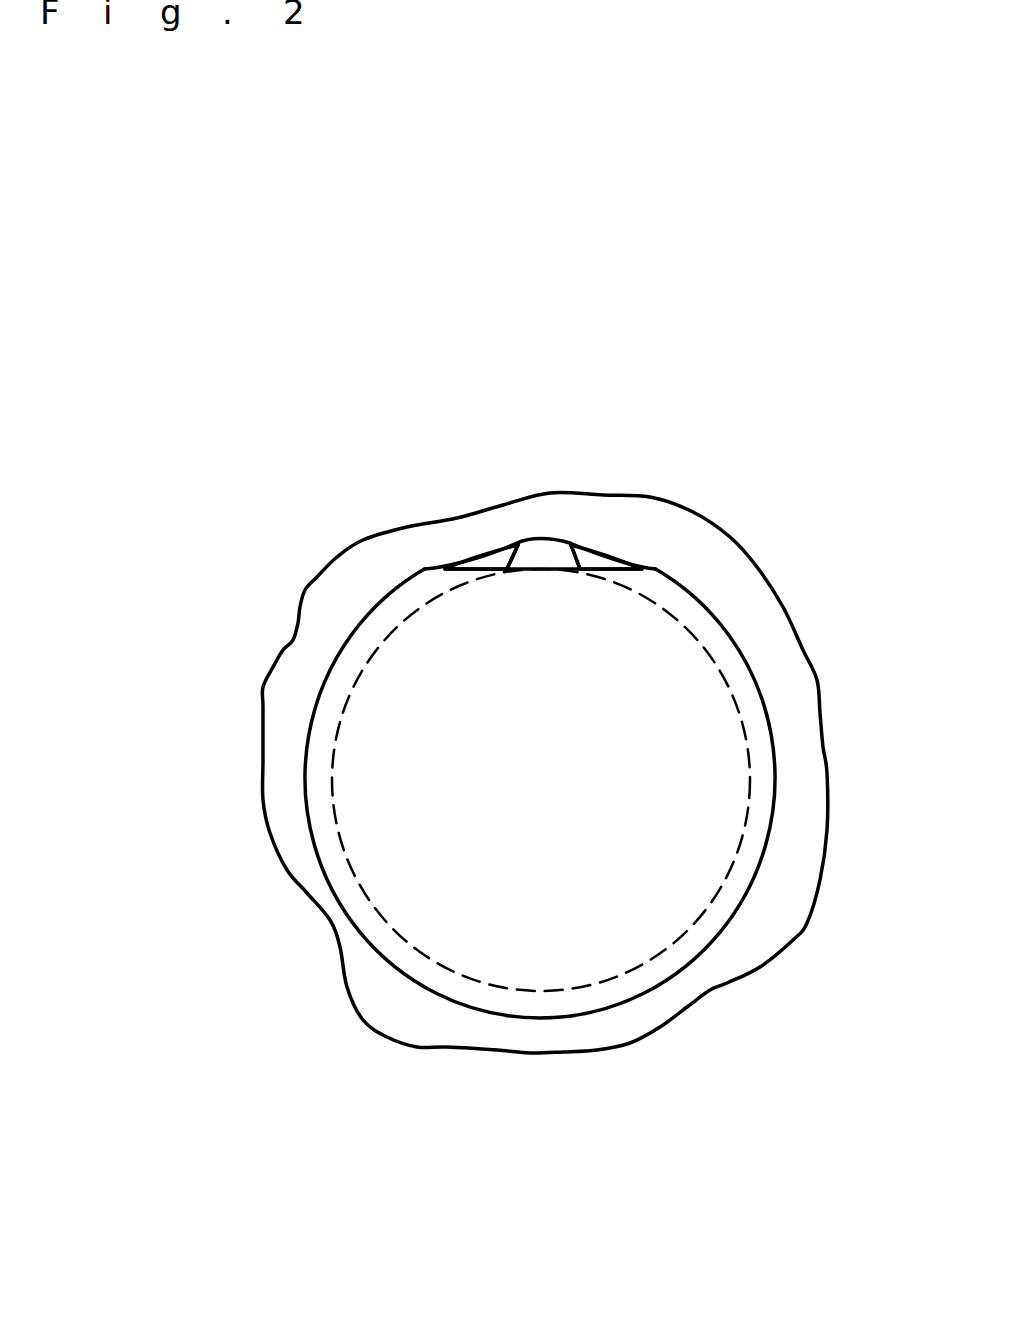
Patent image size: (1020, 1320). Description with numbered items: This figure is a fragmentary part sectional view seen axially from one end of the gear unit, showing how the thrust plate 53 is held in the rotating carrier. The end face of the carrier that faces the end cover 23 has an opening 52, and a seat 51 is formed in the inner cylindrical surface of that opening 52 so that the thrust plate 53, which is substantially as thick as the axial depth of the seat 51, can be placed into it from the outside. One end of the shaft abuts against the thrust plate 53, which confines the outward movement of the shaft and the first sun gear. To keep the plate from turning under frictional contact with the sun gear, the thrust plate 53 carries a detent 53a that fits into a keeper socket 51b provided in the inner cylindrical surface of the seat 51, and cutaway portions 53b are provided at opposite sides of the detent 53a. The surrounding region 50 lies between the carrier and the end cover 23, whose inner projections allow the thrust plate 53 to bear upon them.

The end cover 23 is at (600, 1075).
The clearance space 50 is at (285, 772).
The seat 51 is at (515, 1018).
The keeper socket 51b is at (562, 545).
The opening 52 is at (748, 752).
The thrust plate 53 is at (430, 860).
The detent 53a is at (528, 560).
The cutaway portions 53b is at (608, 570).